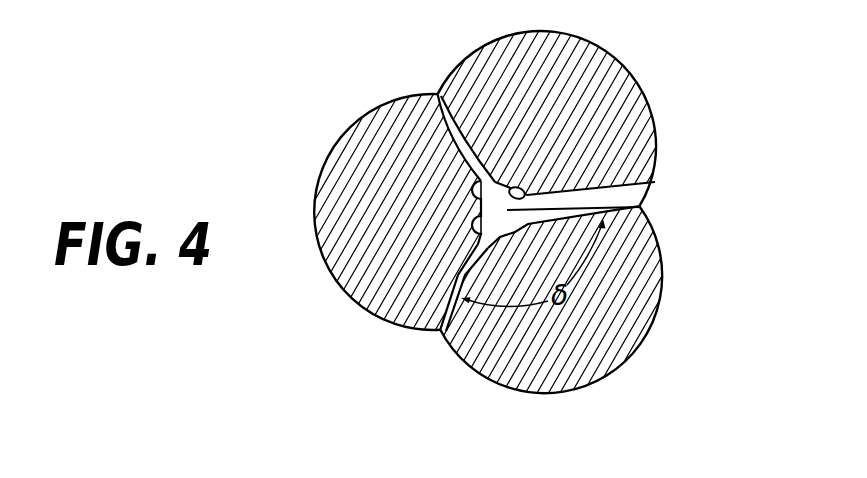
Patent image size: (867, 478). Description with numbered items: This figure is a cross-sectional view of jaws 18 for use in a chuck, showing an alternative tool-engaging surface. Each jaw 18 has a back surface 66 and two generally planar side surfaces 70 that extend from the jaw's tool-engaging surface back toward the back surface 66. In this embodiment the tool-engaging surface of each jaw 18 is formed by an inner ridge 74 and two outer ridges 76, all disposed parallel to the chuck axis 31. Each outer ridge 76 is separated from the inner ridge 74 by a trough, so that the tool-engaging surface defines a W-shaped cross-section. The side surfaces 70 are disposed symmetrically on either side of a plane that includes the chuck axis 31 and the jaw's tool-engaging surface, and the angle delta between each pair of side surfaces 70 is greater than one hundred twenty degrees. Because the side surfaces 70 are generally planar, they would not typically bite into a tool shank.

The jaw 18 is at (651, 323).
The chuck axis 31 is at (655, 182).
The back surface 66 is at (641, 90).
The side surfaces 70 is at (460, 133).
The inner ridge 74 is at (524, 190).
The outer ridges 76 is at (472, 188).